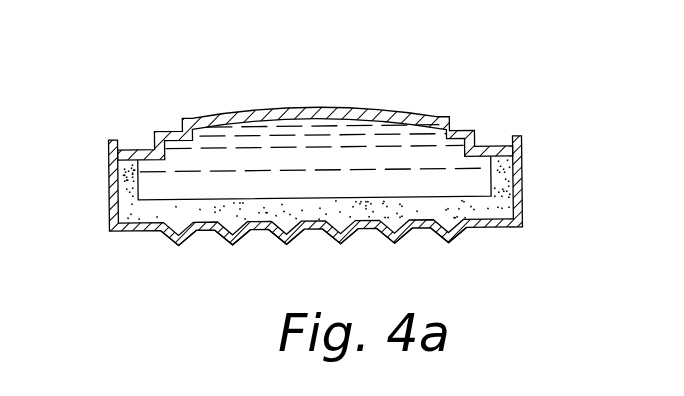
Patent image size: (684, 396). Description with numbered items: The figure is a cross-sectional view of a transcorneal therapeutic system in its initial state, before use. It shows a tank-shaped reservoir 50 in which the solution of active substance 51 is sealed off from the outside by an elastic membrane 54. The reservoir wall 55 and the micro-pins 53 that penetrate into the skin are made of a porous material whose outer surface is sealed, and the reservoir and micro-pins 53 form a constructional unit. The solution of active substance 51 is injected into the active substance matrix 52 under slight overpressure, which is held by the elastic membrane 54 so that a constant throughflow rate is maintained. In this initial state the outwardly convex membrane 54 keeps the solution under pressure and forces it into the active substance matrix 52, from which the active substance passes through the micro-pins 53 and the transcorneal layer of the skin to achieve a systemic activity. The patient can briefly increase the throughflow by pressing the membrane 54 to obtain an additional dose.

The tank-shaped reservoir 50 is at (342, 160).
The solution of active substance 51 is at (478, 182).
The active substance matrix 52 is at (0, 153).
The micro-pins 53 is at (333, 233).
The elastic membrane 54 is at (452, 115).
The reservoir wall 55 is at (523, 208).